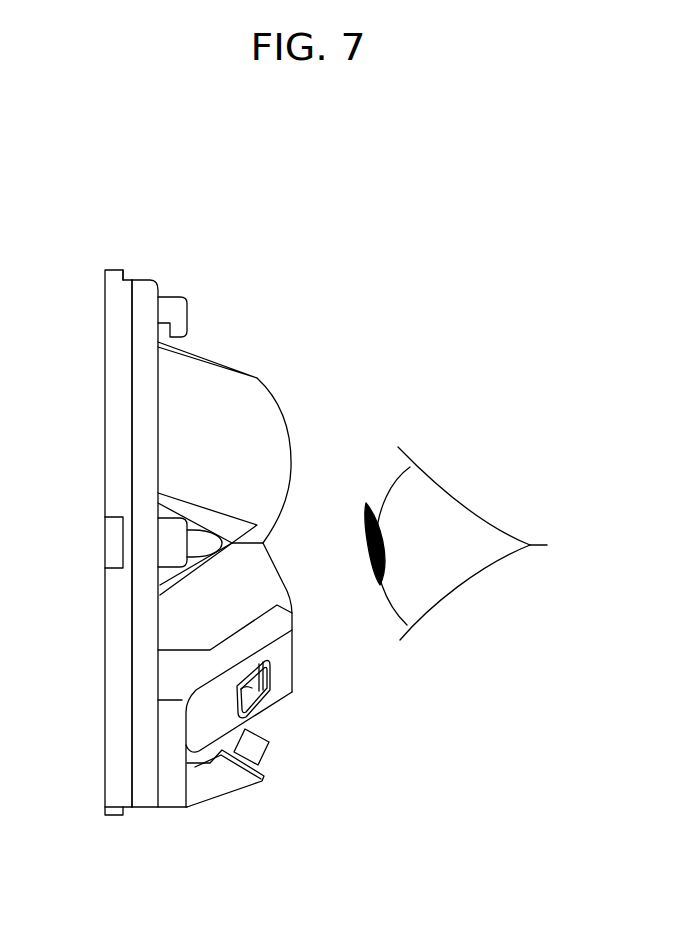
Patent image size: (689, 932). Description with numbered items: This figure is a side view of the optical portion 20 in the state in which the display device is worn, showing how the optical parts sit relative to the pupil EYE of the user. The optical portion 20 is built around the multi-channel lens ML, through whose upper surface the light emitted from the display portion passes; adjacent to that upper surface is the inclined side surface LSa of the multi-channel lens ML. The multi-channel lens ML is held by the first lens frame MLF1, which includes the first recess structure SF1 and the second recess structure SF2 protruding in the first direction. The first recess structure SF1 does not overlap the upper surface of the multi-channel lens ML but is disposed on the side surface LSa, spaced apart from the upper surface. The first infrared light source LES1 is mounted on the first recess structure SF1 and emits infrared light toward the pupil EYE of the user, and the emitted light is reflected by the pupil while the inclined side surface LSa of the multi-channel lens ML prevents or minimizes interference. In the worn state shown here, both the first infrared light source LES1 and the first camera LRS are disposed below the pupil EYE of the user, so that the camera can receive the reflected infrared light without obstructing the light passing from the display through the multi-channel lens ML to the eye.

The optical portion 20 is at (123, 237).
The multi-channel lens ML is at (117, 788).
The first lens frame MLF1 is at (145, 788).
The side surface LSa is at (185, 618).
The first recess structure SF1 is at (197, 715).
The second recess structure SF2 is at (212, 788).
The first infrared light source LES1 is at (258, 680).
The first camera LRS is at (253, 750).
The pupil EYE is at (457, 518).